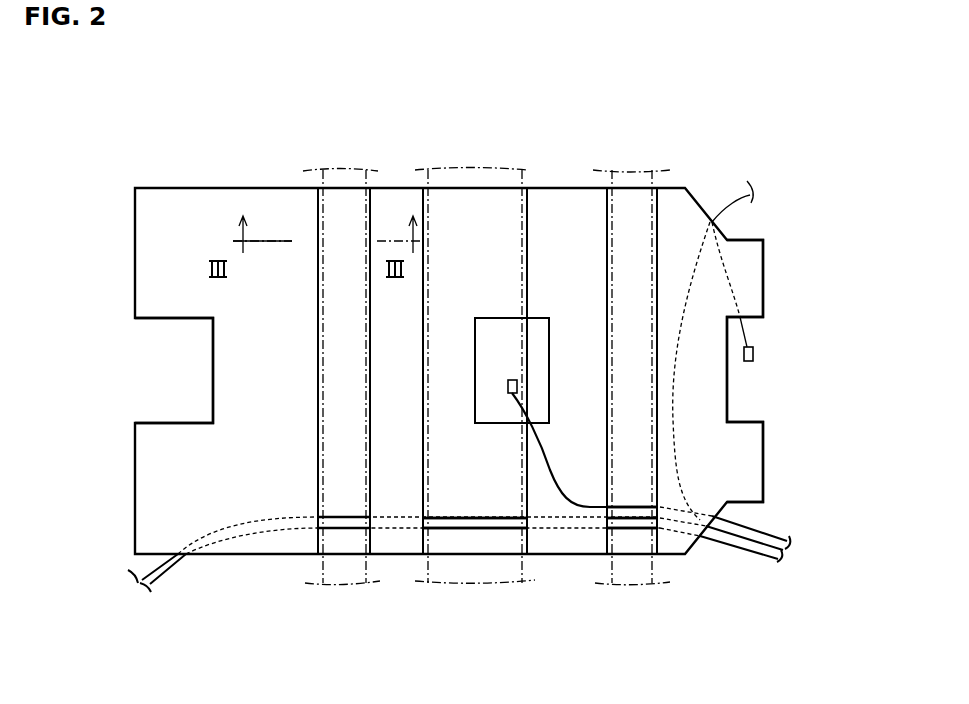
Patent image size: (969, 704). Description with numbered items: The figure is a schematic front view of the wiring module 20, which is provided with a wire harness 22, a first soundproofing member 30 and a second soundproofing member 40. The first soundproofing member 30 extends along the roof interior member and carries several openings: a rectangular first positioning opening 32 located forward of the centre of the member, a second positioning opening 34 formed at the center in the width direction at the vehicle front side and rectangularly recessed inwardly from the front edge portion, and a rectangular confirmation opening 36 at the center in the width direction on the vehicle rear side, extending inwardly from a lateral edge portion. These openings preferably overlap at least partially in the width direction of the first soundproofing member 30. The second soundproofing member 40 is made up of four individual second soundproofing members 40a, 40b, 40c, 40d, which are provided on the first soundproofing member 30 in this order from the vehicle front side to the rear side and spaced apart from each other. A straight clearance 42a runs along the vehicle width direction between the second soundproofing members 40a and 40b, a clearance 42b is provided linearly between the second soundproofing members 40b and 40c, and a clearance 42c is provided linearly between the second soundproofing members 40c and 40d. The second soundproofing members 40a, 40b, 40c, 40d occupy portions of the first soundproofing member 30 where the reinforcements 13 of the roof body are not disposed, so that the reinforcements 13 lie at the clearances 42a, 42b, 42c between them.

The wiring module 20 is at (422, 138).
The reinforcements 13 is at (318, 212).
The wire harness 22 is at (463, 530).
The first soundproofing member 30 is at (508, 543).
The first positioning opening 32 is at (492, 325).
The second positioning opening 34 is at (727, 383).
The confirmation opening 36 is at (172, 318).
The second soundproofing member 40 is at (557, 558).
The second soundproofing member 40a is at (688, 554).
The second soundproofing member 40b is at (588, 540).
The second soundproofing member 40c is at (393, 541).
The second soundproofing member 40d is at (270, 545).
The clearance 42a is at (657, 208).
The clearance 42b is at (527, 228).
The clearance 42c is at (370, 208).